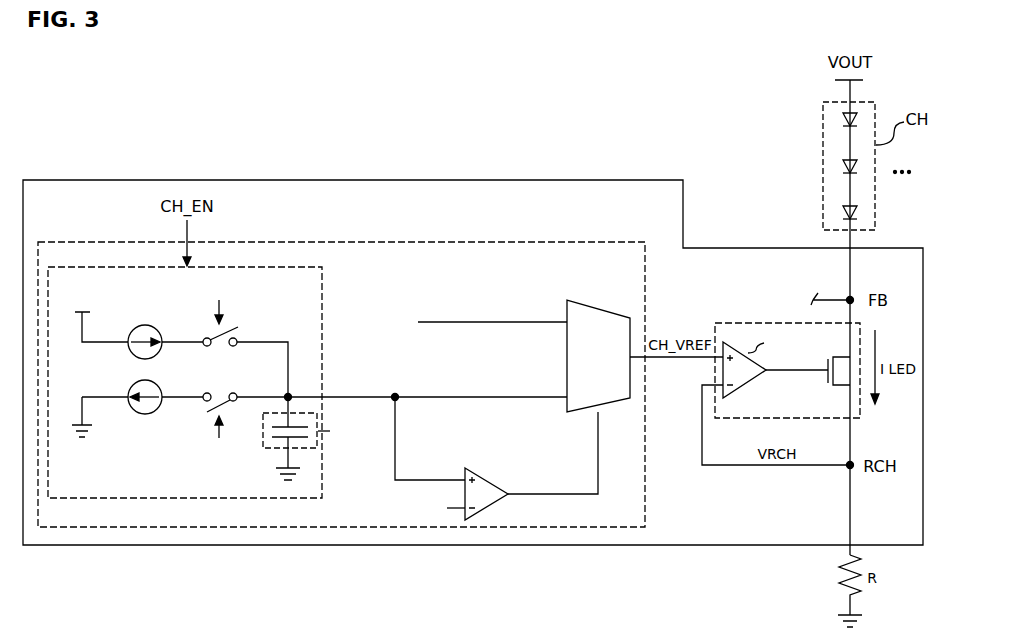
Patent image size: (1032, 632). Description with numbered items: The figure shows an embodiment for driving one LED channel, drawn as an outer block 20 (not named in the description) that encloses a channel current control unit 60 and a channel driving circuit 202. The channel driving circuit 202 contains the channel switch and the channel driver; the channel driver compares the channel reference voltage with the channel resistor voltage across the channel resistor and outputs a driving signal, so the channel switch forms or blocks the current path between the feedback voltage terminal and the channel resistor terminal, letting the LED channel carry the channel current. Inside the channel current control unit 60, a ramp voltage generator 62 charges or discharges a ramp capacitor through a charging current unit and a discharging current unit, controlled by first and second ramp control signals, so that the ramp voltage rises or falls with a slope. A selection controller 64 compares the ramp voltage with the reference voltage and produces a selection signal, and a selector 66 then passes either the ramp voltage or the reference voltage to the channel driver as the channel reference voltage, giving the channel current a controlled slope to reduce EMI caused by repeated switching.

The LED driving circuit 20 is at (499, 180).
The channel current control unit 60 is at (645, 285).
The ramp voltage generator 62 is at (322, 293).
The selection controller 64 is at (480, 466).
The selector 66 is at (595, 300).
The channel driving circuit 202 is at (750, 323).